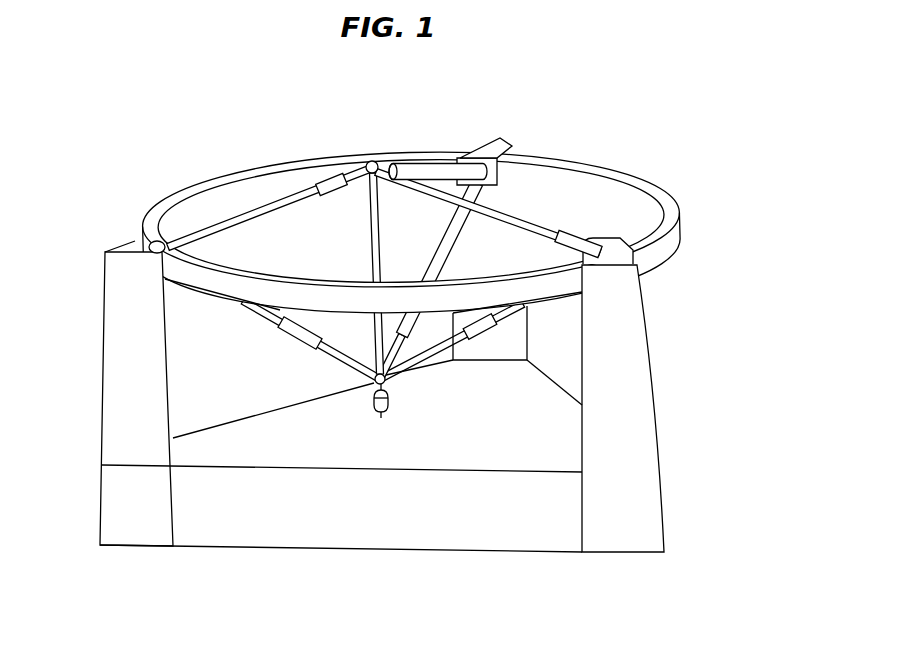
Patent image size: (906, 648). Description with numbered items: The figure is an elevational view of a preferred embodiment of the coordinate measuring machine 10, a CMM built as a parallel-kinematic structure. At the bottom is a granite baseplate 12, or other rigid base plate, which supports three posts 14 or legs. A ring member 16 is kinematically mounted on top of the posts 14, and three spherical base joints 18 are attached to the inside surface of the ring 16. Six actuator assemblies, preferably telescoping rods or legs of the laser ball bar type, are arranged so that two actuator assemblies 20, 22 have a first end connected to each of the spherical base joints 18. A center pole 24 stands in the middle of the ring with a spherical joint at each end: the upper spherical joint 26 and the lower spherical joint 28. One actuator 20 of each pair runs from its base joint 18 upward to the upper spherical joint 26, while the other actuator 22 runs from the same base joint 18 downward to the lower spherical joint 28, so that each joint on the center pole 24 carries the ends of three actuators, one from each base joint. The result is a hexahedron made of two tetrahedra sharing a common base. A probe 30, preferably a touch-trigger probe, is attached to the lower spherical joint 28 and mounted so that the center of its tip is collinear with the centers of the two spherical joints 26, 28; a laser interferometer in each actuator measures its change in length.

The coordinate measuring machine 10 is at (666, 152).
The granite baseplate 12 is at (372, 522).
The posts 14 is at (103, 391).
The ring member 16 is at (228, 172).
The spherical base joints 18 is at (160, 240).
The actuator assemblies 20 is at (272, 206).
The actuator assemblies 22 is at (432, 256).
The center pole 24 is at (370, 233).
The upper spherical joint 26 is at (373, 160).
The lower spherical joint 28 is at (372, 389).
The probe 30 is at (392, 403).